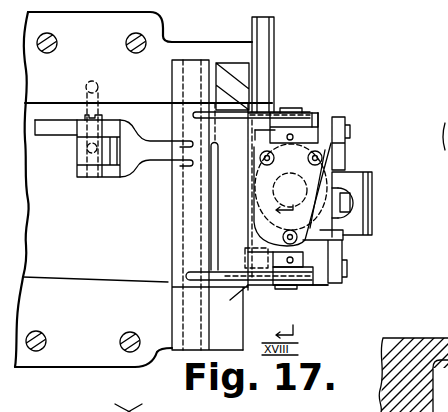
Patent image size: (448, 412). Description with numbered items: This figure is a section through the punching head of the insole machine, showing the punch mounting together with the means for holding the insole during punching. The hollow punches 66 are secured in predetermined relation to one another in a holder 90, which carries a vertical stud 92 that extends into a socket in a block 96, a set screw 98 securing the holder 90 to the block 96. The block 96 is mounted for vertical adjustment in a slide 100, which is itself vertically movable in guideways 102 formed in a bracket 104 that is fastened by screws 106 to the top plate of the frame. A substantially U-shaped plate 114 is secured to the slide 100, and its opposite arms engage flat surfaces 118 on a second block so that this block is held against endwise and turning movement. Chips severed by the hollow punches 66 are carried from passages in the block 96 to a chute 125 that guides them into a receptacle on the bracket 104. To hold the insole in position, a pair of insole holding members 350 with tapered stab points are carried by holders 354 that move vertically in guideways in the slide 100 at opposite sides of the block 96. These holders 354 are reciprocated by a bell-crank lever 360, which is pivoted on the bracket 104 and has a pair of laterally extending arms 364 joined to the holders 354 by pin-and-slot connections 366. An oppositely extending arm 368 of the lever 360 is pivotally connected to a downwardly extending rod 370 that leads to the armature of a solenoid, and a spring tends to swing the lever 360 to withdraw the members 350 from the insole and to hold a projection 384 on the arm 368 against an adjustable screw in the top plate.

The bracket 104 is at (100, 360).
The screws 106 is at (128, 38).
The projection 384 is at (43, 133).
The arm 368 is at (142, 160).
The rod 370 is at (80, 148).
The bell-crank lever 360 is at (173, 238).
The slide 100 is at (231, 197).
The guideways 102 is at (231, 63).
The chute 125 is at (270, 23).
The punches 66 is at (257, 153).
The insole holding members 350 is at (256, 128).
The pin-and-slot connections 366 is at (300, 108).
The laterally extending arms 364 is at (312, 115).
The holders 354 is at (308, 123).
The flat surfaces 118 is at (253, 175).
The holder 90 is at (337, 177).
The set screw 98 is at (352, 198).
The stud 92 is at (373, 205).
The U-shaped plate 114 is at (345, 217).
The block 96 is at (345, 243).